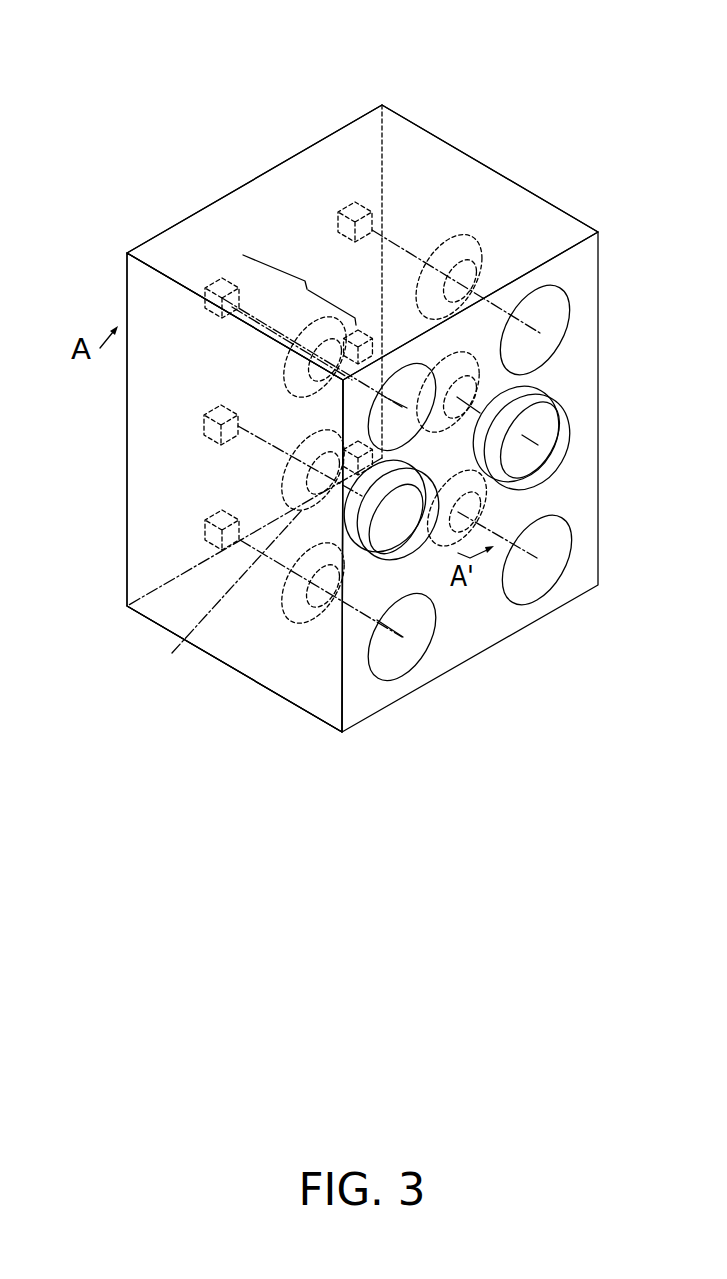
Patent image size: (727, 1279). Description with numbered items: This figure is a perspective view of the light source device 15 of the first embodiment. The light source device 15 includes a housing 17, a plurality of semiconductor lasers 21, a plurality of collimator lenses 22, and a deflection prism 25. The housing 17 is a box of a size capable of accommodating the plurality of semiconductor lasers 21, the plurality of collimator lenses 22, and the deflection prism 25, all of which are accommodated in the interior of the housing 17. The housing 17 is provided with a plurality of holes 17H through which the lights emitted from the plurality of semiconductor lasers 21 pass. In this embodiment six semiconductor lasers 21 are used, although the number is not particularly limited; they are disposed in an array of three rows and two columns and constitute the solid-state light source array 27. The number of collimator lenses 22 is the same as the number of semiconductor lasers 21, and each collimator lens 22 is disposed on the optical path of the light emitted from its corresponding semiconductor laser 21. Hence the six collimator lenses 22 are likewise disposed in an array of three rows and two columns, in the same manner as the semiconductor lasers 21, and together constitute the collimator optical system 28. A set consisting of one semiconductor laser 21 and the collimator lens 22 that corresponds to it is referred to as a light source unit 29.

The light source device 15 is at (346, 82).
The housing 17 is at (215, 247).
The holes 17H is at (370, 660).
The semiconductor lasers 21 is at (206, 423).
The collimator lenses 22 is at (230, 599).
The deflection prism 25 is at (395, 548).
The solid-state light source array 27 is at (170, 519).
The collimator optical system 28 is at (287, 670).
The light source unit 29 is at (307, 282).